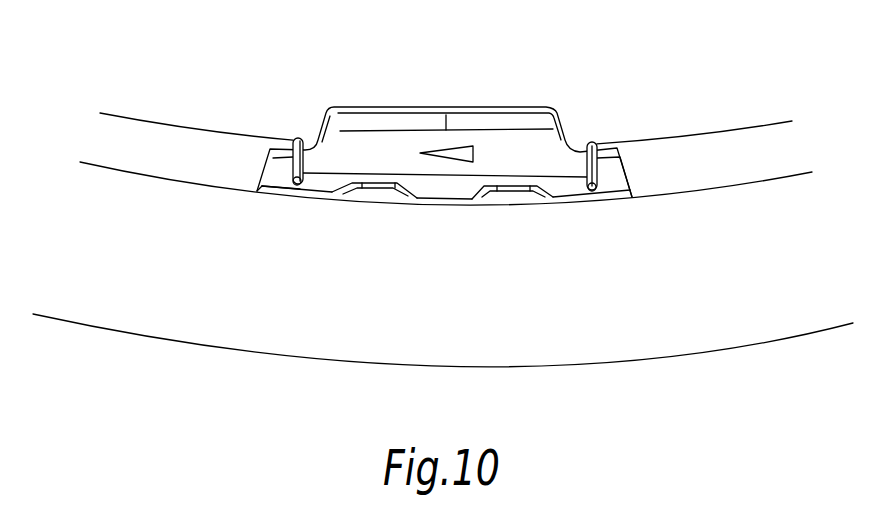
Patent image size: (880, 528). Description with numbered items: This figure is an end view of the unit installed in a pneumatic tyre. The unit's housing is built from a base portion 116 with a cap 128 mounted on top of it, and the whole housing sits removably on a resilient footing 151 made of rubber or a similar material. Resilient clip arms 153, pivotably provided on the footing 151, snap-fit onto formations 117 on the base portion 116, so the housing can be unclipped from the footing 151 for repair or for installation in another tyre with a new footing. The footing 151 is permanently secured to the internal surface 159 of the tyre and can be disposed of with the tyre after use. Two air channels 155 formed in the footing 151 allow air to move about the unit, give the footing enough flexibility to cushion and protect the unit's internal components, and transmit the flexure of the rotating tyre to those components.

The base portion 116 is at (280, 160).
The formations 117 is at (603, 143).
The cap 128 is at (517, 112).
The footing 151 is at (455, 188).
The clip arms 153 is at (293, 188).
The air channels 155 is at (382, 191).
The internal surface 159 is at (717, 188).